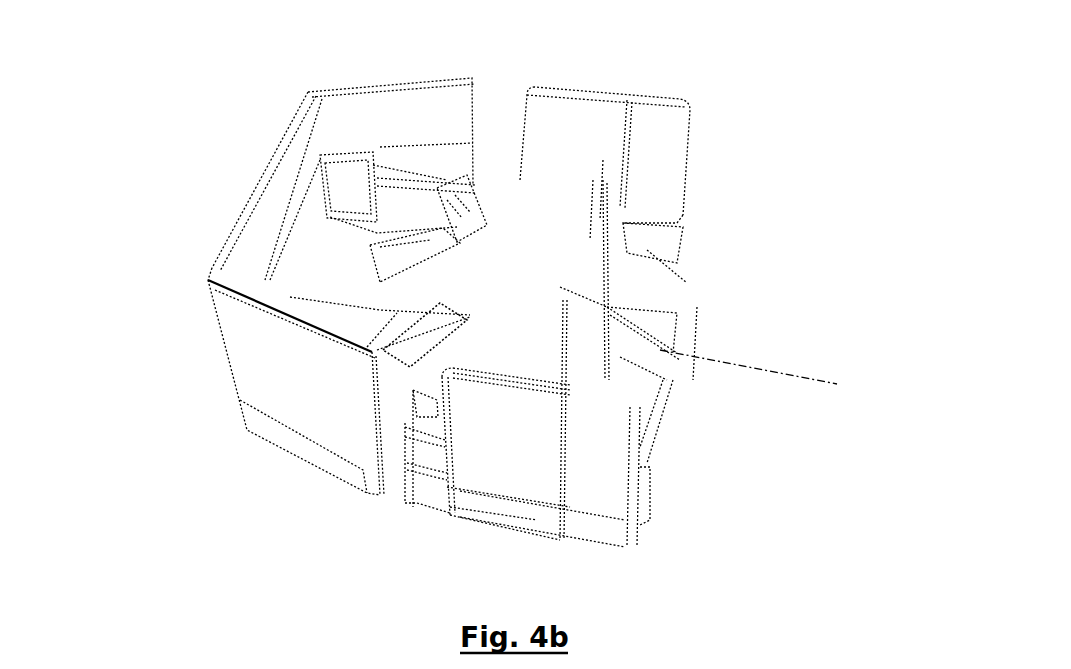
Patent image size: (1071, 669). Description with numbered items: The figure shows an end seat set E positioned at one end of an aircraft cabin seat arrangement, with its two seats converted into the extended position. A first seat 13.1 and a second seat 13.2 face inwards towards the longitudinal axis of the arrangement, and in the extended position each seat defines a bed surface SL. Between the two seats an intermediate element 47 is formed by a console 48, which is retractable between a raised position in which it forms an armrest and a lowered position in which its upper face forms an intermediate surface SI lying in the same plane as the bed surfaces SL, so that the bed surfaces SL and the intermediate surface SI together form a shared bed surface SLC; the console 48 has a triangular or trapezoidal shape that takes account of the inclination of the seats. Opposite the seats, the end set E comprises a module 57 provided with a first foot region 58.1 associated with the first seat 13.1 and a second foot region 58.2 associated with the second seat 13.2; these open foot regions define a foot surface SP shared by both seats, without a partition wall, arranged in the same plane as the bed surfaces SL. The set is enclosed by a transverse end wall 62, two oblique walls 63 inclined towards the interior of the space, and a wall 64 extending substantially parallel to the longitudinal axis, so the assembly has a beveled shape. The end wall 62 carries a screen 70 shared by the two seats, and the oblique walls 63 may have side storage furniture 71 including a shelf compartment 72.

The end seat set E is at (150, 40).
The end wall 62 is at (237, 230).
The oblique walls 63 is at (385, 78).
The foot surface SP is at (315, 275).
The second foot region 58.2 is at (312, 308).
The first foot region 58.1 is at (332, 253).
The module 57 is at (317, 250).
The screen 70 is at (293, 175).
The side storage furniture 71 is at (380, 218).
The shelf compartment 72 is at (430, 182).
The bed surface SL is at (420, 262).
The shared bed surface SLC is at (467, 260).
The first seat 13.1 is at (497, 302).
The intermediate surface SI is at (530, 275).
The intermediate element 47 is at (513, 313).
The console 48 is at (487, 358).
The second seat 13.2 is at (433, 383).
The wall 64 is at (547, 477).